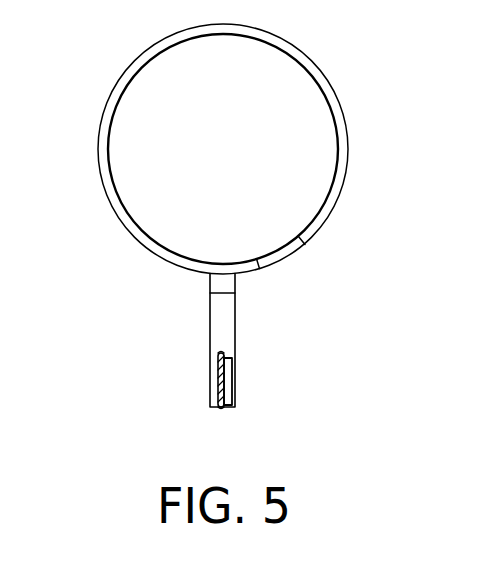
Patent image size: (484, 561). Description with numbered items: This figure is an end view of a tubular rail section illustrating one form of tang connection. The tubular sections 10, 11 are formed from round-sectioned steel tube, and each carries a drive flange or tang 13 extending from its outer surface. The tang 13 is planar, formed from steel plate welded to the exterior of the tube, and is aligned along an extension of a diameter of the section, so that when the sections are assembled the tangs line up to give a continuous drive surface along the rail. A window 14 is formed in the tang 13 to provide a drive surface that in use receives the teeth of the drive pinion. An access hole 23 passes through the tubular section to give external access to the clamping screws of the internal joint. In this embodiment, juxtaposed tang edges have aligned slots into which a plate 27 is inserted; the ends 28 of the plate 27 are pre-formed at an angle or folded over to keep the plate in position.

The tubular section 10 is at (206, 144).
The tubular section 11 is at (132, 66).
The access hole 23 is at (285, 252).
The window 14 is at (218, 323).
The plate 27 is at (218, 378).
The tang 13 is at (236, 387).
The plate end 28 is at (228, 351).